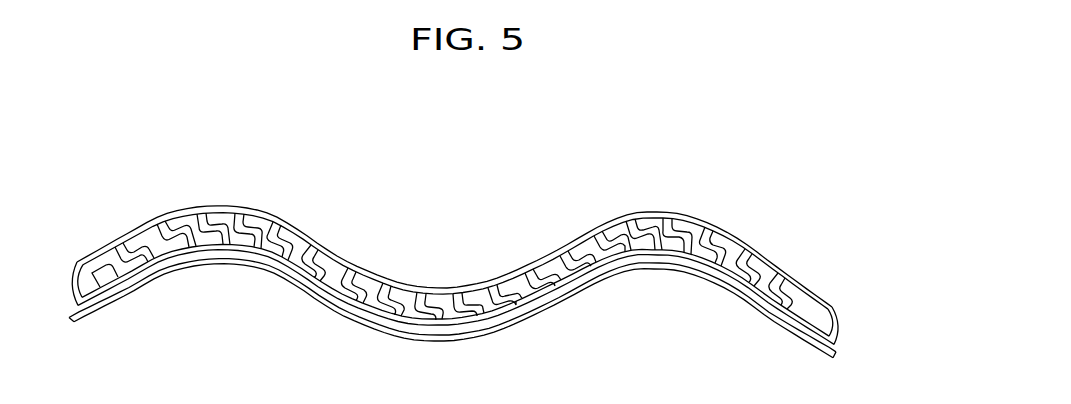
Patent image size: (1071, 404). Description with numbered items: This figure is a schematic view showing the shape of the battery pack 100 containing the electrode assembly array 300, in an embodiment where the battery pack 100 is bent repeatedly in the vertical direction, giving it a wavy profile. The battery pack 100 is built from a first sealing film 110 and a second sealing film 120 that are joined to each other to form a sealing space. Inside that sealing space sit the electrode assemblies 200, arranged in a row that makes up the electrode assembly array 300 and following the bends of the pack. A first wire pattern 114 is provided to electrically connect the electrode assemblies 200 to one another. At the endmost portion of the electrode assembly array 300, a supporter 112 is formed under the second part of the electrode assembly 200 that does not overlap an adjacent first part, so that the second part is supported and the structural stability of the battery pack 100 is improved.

The battery pack 100 is at (803, 181).
The first sealing film 110 is at (437, 336).
The supporter 112 is at (103, 283).
The first wire pattern 114 is at (490, 319).
The second sealing film 120 is at (438, 291).
The electrode assembly 200 is at (372, 307).
The electrode assembly array 300 is at (815, 308).